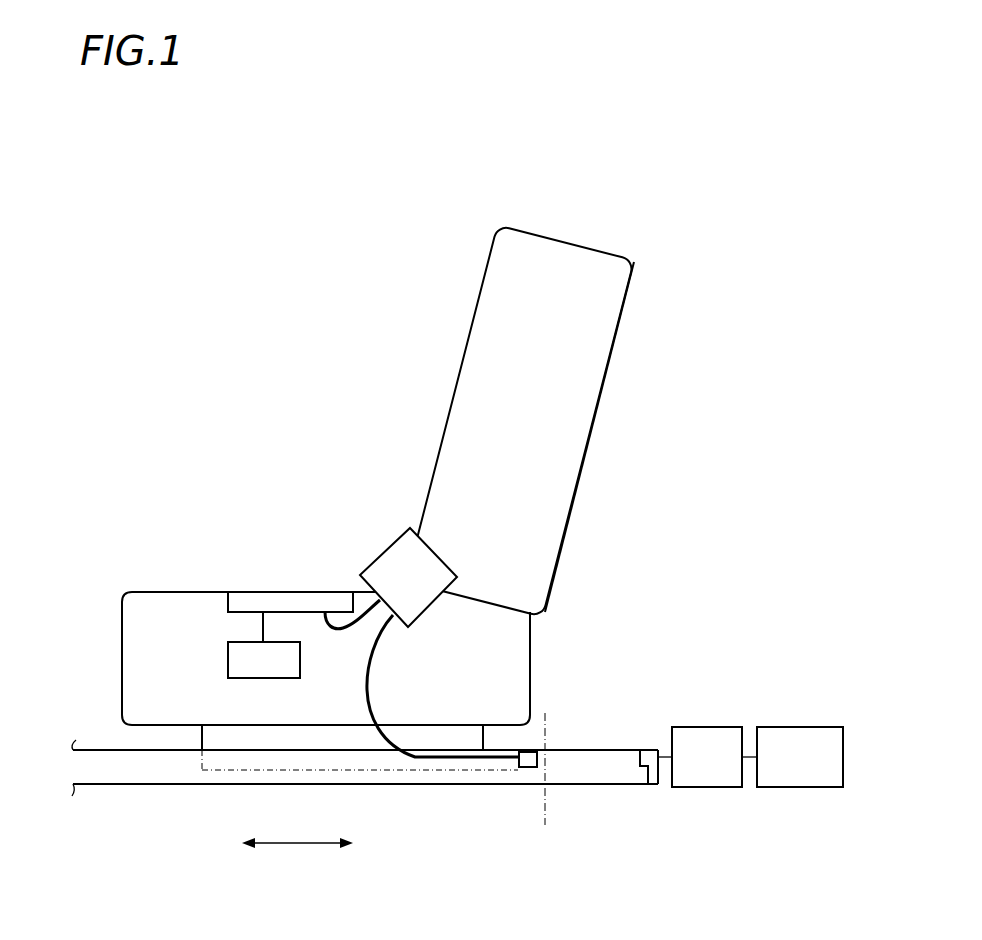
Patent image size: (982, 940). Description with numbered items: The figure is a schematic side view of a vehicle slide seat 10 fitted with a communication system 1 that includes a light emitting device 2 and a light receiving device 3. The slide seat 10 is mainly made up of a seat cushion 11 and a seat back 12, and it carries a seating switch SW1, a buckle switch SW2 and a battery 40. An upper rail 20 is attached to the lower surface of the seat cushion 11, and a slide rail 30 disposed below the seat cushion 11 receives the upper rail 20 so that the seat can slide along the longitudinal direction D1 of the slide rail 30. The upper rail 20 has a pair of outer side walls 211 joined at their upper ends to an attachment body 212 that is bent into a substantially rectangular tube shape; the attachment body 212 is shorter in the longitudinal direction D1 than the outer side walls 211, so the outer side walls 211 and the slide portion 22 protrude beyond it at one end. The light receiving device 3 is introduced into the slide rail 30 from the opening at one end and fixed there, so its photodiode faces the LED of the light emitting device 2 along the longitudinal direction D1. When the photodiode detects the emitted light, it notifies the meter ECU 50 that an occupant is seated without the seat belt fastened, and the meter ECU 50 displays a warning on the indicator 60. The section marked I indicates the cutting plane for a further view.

The communication system 1 is at (650, 848).
The light emitting device 2 is at (527, 770).
The light receiving device 3 is at (647, 774).
The slide seat 10 is at (640, 296).
The seat back 12 is at (598, 409).
The seat cushion 11 is at (158, 608).
The upper rail 20 is at (192, 745).
The slide portion 22 is at (442, 751).
The outer side walls 211 is at (397, 762).
The attachment body 212 is at (462, 733).
The slide rail 30 is at (112, 773).
The battery 40 is at (228, 662).
The meter ECU 50 is at (712, 727).
The indicator 60 is at (793, 727).
The seating switch SW1 is at (277, 592).
The buckle switch SW2 is at (443, 558).
The longitudinal direction D1 is at (290, 848).
The section line I- I is at (558, 723).